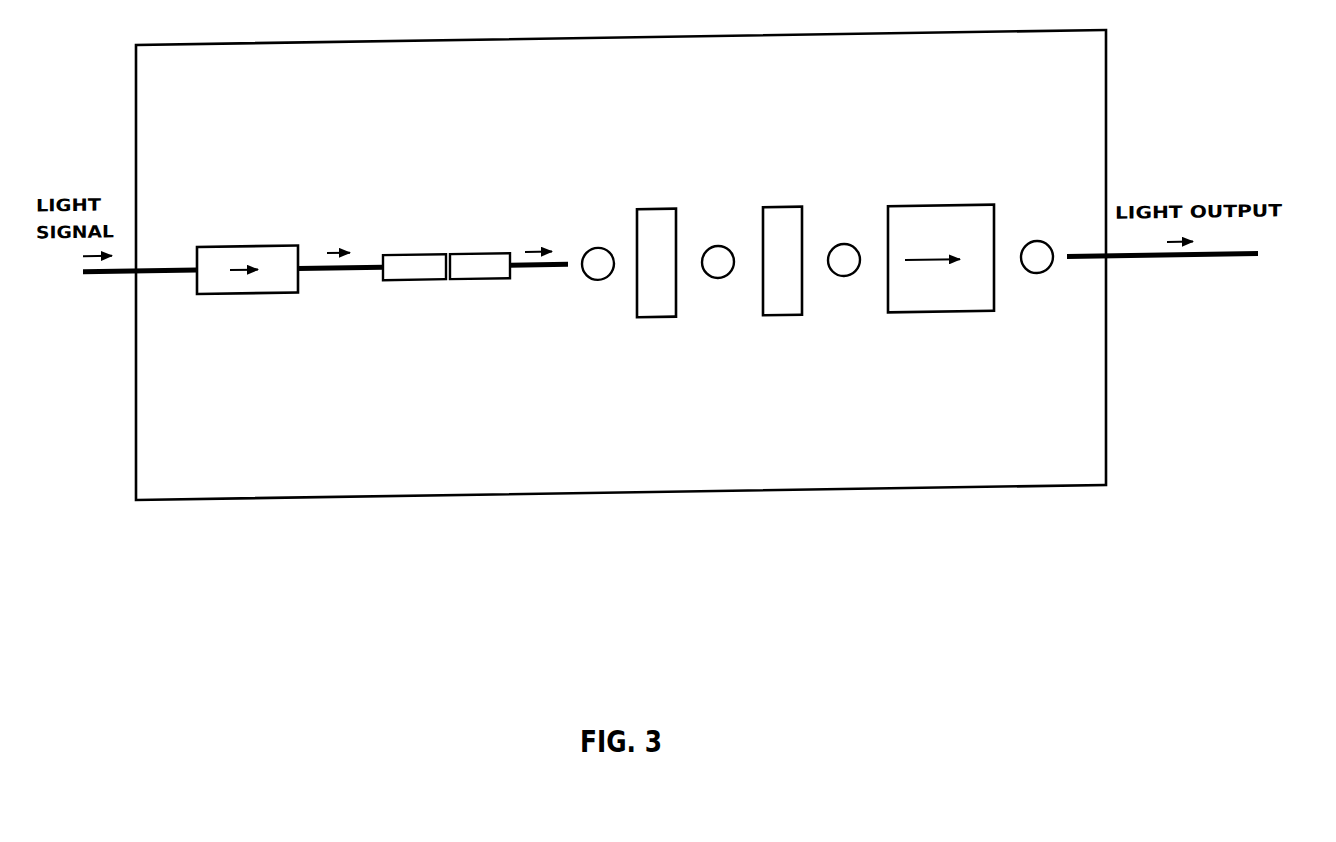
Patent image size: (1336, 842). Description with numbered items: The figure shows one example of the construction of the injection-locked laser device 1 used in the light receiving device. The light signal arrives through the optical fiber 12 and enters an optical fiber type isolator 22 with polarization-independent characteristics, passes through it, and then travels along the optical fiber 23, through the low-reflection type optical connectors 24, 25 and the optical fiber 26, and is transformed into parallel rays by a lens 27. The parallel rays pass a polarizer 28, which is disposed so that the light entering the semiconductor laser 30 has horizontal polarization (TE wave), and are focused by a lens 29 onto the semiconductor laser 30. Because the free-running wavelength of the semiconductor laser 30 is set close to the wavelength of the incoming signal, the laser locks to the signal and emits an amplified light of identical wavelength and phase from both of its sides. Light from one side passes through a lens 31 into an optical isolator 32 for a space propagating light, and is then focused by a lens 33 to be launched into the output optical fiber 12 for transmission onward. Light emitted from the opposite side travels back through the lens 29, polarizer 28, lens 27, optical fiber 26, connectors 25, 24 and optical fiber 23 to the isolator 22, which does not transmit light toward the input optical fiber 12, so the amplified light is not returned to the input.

The injection-locked laser device 1 is at (530, 500).
The optical fiber 12 is at (115, 277).
The optical fiber type isolator with polarization-independent characteristics 22 is at (213, 248).
The optical fiber 23 is at (325, 278).
The low-reflection type optical connector 24 is at (410, 260).
The low-reflection type optical connector 25 is at (490, 259).
The optical fiber 26 is at (545, 276).
The lens 27 is at (587, 324).
The polarizer 28 is at (657, 217).
The lens 29 is at (718, 288).
The semiconductor laser 30 is at (785, 217).
The lens 31 is at (844, 288).
The optical isolator for a space propagating light 32 is at (927, 325).
The lens 33 is at (1037, 287).